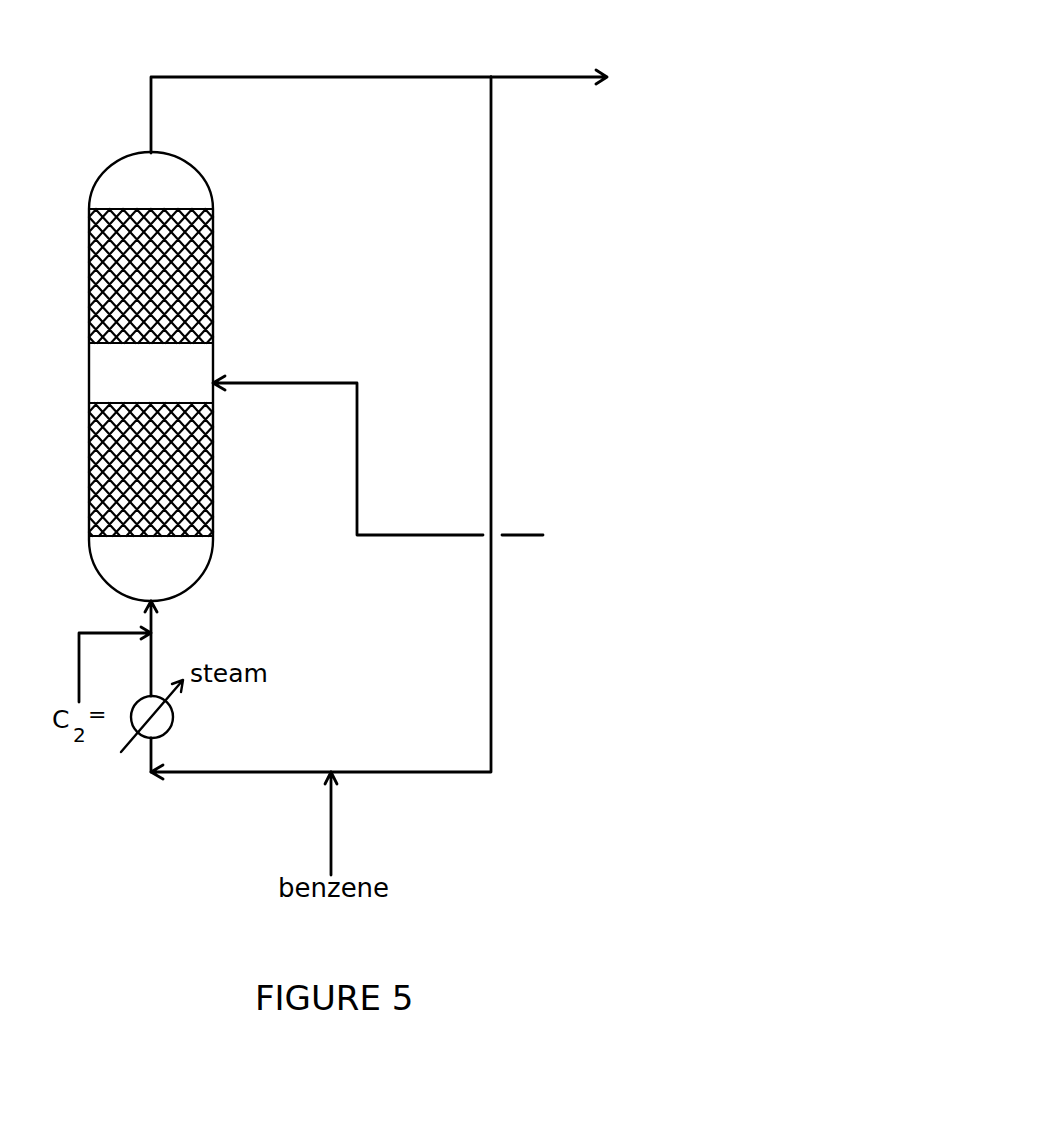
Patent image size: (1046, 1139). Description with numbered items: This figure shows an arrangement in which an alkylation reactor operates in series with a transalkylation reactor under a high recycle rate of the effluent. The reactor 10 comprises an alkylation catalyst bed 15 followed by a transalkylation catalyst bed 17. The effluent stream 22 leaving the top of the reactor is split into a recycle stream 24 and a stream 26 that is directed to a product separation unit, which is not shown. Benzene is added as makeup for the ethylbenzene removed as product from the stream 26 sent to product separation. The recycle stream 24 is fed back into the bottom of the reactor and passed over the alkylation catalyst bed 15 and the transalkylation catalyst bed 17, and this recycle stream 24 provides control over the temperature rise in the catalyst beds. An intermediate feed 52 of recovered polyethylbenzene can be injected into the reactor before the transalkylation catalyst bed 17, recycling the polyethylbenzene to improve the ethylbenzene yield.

The reactor 10 is at (212, 262).
The alkylation catalyst bed 15 is at (120, 477).
The transalkylation catalyst bed 17 is at (120, 280).
The effluent stream 22 is at (273, 77).
The recycle stream 24 is at (491, 332).
The stream directed to a product separation unit 26 is at (563, 77).
The intermediate feed 52 is at (273, 383).